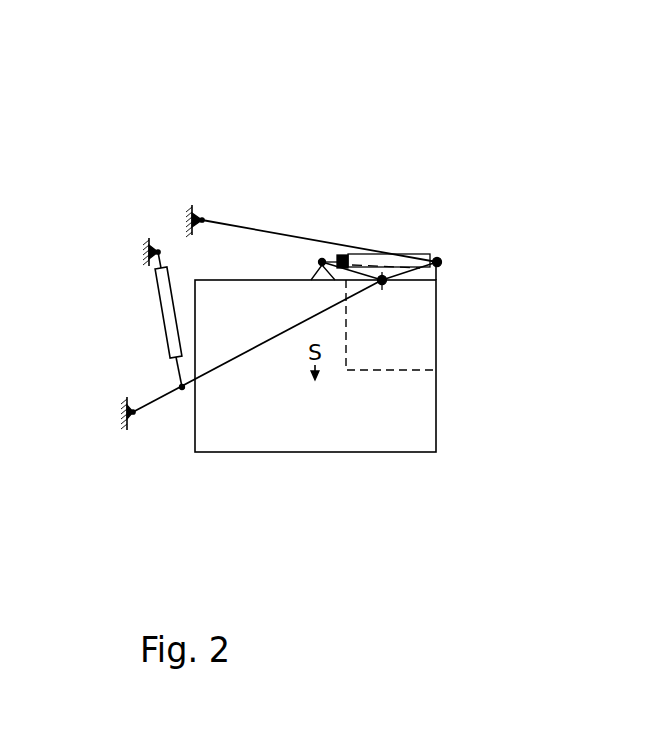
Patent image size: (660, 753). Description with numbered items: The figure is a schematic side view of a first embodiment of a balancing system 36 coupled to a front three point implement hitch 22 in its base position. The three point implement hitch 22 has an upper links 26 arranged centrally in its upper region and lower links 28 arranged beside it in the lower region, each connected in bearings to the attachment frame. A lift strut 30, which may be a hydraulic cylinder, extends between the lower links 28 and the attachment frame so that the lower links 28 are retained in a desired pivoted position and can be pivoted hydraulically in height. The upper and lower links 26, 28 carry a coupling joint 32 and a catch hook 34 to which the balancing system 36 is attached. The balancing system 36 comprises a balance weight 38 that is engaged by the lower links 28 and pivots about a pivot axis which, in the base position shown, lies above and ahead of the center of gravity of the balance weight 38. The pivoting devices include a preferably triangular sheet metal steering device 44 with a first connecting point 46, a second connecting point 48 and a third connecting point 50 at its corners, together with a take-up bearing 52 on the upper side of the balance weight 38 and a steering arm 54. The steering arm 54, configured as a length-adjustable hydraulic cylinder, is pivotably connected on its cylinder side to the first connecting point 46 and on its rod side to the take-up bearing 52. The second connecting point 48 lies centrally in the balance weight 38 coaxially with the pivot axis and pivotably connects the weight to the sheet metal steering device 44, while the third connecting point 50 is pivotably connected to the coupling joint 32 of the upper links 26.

The three point implement hitch 22 is at (233, 165).
The upper links 26 is at (275, 232).
The lower links 28 is at (150, 405).
The lift strut 30 is at (167, 308).
The coupling joint 32 is at (441, 260).
The catch hook 34 is at (388, 283).
The balancing system 36 is at (478, 381).
The balance weight 38 is at (375, 438).
The sheet metal steering device 44 is at (408, 270).
The first connecting point 46 is at (348, 257).
The second connecting point 48 is at (383, 285).
The third connecting point 50 is at (438, 258).
The take-up bearing 52 is at (323, 259).
The steering arm 54 is at (378, 262).